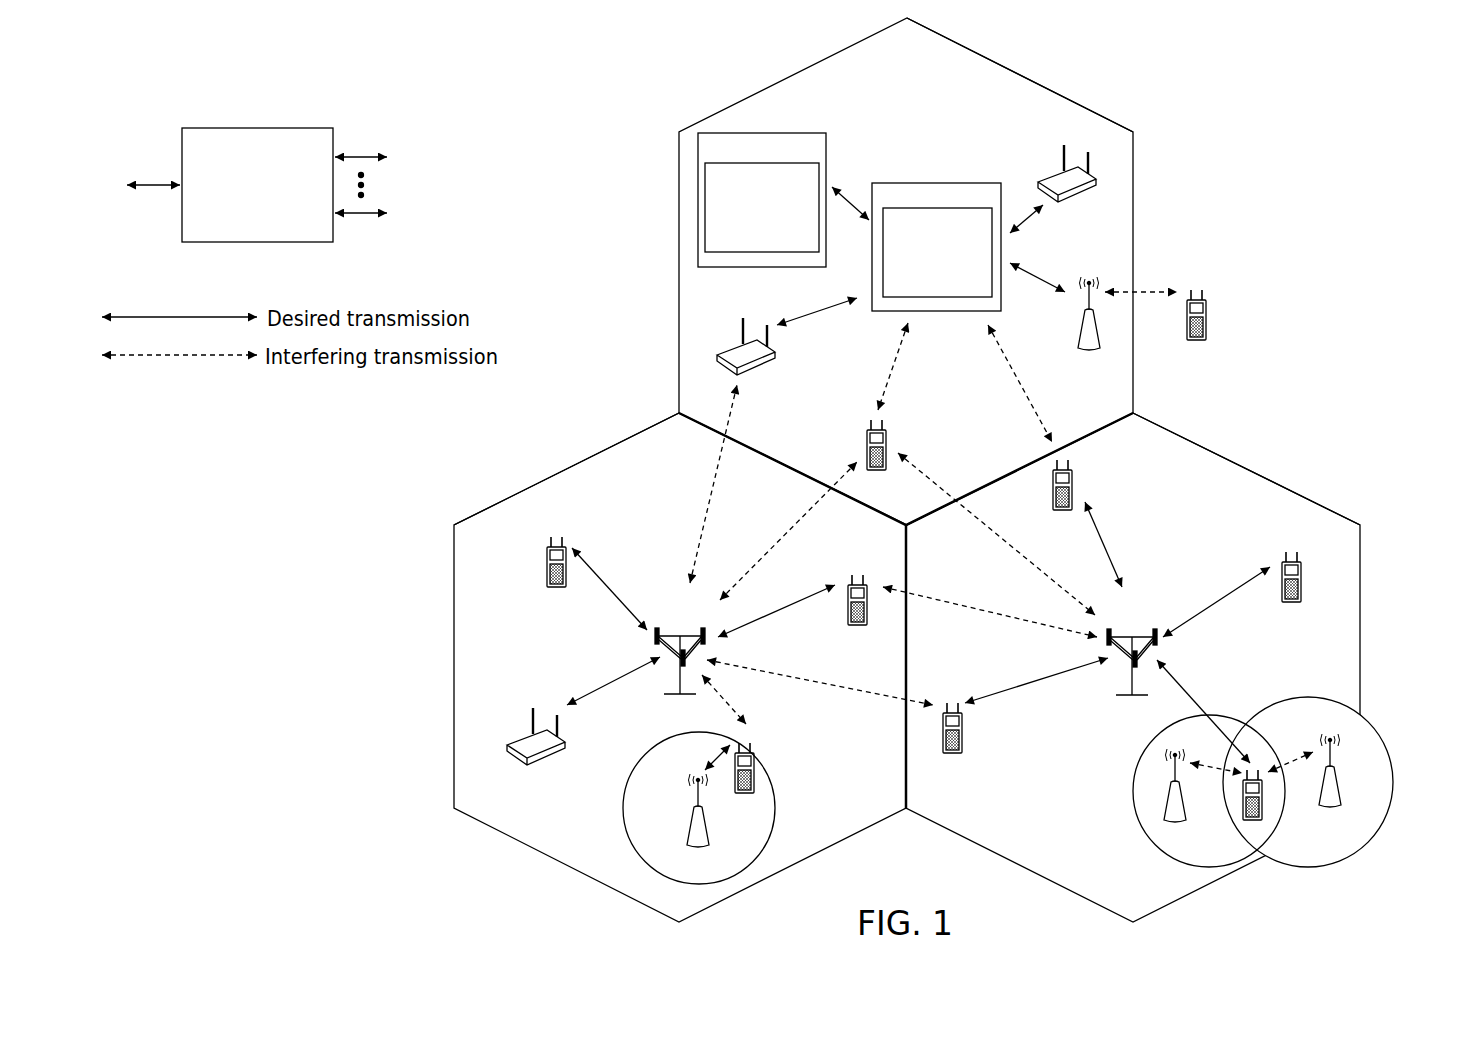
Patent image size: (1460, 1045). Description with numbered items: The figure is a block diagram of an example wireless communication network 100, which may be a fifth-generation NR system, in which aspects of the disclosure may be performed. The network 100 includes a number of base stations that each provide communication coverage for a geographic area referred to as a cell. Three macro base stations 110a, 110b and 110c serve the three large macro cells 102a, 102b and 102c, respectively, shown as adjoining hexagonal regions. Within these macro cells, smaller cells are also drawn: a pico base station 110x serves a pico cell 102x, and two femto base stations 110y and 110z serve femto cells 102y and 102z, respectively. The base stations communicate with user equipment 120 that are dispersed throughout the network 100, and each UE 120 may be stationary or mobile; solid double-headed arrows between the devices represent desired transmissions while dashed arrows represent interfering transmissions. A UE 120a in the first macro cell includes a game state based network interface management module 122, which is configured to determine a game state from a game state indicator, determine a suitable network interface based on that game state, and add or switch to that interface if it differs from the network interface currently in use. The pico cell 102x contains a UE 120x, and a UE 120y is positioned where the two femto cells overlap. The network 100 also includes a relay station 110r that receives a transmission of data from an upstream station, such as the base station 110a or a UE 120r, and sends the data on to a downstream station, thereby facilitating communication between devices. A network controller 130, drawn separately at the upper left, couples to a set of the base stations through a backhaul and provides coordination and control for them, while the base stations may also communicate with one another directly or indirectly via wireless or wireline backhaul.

The wireless communication network 100 is at (1283, 89).
The macro cell 102a is at (1037, 58).
The macro cell 102b is at (568, 468).
The macro cell 102c is at (1258, 453).
The pico cell 102x is at (647, 752).
The femto cell 102y is at (1142, 763).
The femto cell 102z is at (1320, 680).
The macro base station 110a is at (972, 182).
The macro base station 110b is at (687, 617).
The macro base station 110c is at (1142, 617).
The relay station 110r is at (1080, 325).
The pico base station 110x is at (708, 833).
The femto base station 110y is at (1183, 808).
The femto base station 110z is at (1340, 793).
The user equipment 120 is at (1075, 162).
The user equipment 120a is at (748, 157).
The user equipment 120r is at (1207, 327).
The user equipment 120x is at (768, 742).
The user equipment 120y is at (1243, 815).
The game state based NI management module 122 is at (742, 163).
The network controller 130 is at (253, 128).